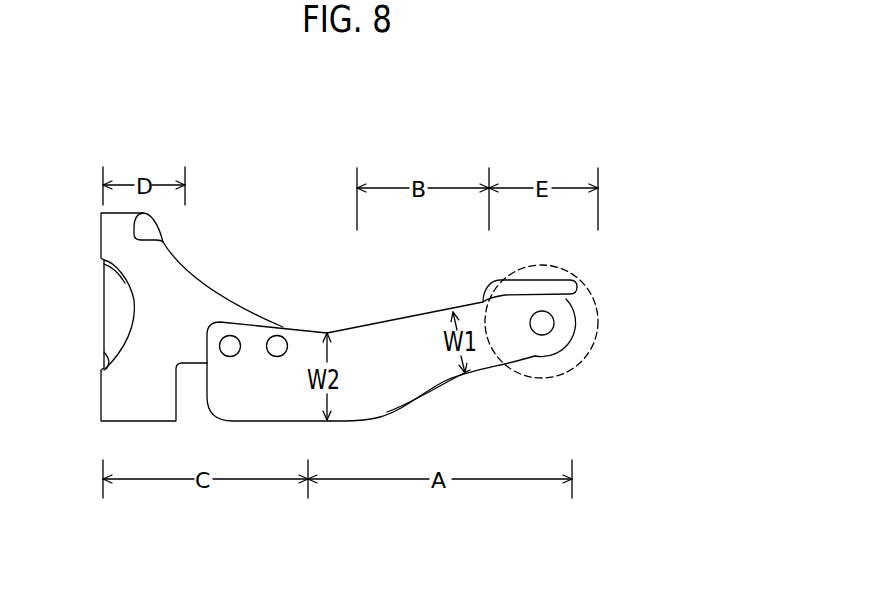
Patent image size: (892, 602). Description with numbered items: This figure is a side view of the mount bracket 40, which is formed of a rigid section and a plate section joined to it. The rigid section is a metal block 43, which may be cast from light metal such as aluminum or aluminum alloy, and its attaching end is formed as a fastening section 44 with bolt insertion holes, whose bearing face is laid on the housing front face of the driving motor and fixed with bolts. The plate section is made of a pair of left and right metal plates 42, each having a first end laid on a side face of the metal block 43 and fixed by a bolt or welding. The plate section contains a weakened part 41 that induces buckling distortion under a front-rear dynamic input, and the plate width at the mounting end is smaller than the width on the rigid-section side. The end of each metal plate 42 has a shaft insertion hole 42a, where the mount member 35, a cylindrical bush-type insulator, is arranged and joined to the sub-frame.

The mount member 35 is at (591, 294).
The mount bracket 40 is at (283, 300).
The weakened part 41 is at (423, 342).
The metal plate 42 is at (353, 325).
The shaft insertion hole 42a is at (541, 335).
The metal block 43 is at (210, 282).
The fastening section 44 is at (116, 392).